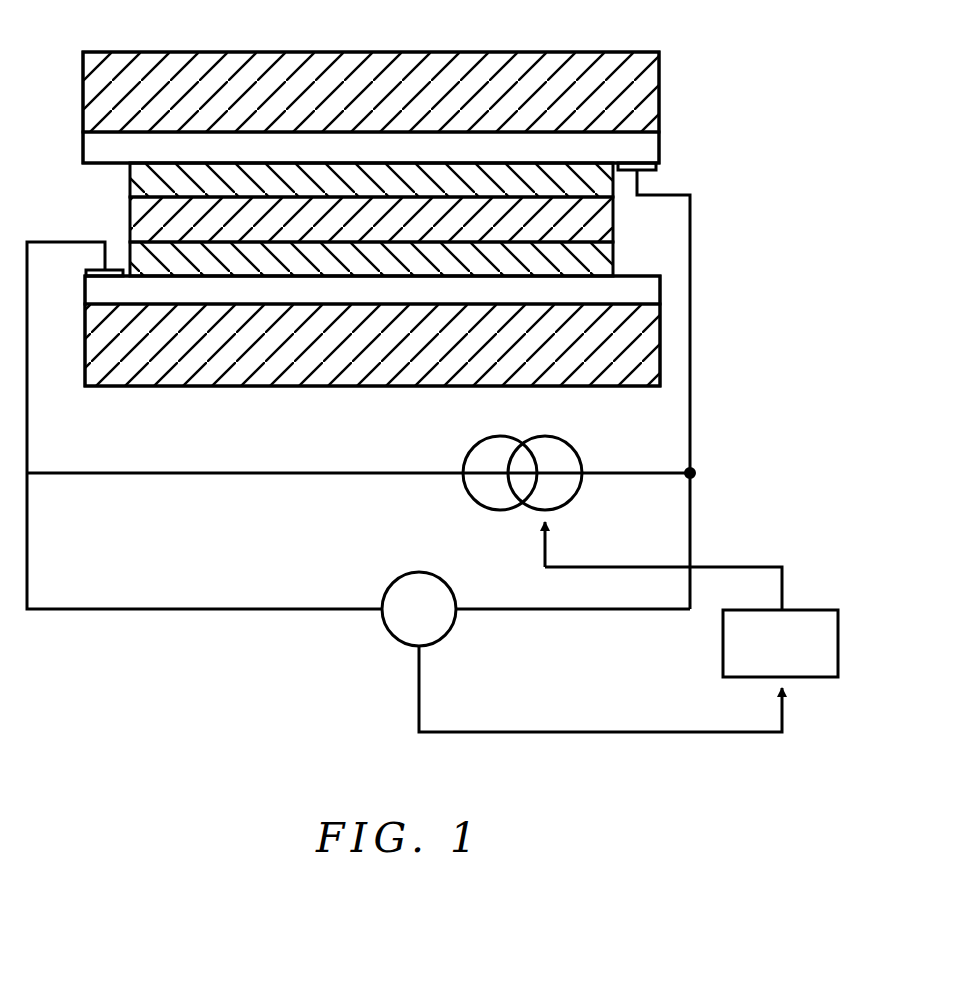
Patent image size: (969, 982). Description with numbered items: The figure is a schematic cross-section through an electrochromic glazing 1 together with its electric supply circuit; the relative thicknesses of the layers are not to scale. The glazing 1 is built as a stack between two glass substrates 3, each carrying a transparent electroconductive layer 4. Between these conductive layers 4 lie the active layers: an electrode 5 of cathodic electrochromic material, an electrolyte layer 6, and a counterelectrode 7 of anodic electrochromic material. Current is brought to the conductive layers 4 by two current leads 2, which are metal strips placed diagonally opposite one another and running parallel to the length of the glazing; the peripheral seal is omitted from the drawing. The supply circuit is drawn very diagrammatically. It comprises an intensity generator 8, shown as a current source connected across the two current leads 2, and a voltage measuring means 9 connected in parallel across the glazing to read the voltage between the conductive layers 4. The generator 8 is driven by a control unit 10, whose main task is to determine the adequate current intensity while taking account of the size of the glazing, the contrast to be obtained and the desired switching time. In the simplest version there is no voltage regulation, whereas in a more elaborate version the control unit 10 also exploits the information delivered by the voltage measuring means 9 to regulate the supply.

The glazing 1 is at (690, 48).
The current leads 2 is at (658, 172).
The glass substrates 3 is at (658, 100).
The transparent electroconductive layers 4 is at (657, 146).
The electrode of cathodic electrochromic material 5 is at (129, 182).
The electrolyte layer 6 is at (131, 218).
The counterelectrode of anodic electrochromic material 7 is at (153, 272).
The intensity generator 8 is at (573, 452).
The voltage measuring means 9 is at (400, 585).
The control unit 10 is at (723, 650).